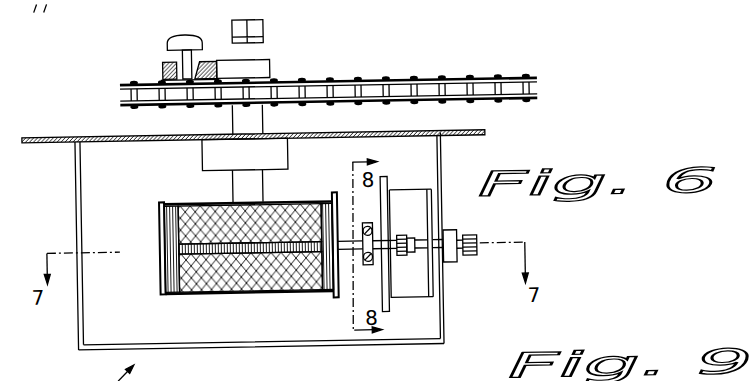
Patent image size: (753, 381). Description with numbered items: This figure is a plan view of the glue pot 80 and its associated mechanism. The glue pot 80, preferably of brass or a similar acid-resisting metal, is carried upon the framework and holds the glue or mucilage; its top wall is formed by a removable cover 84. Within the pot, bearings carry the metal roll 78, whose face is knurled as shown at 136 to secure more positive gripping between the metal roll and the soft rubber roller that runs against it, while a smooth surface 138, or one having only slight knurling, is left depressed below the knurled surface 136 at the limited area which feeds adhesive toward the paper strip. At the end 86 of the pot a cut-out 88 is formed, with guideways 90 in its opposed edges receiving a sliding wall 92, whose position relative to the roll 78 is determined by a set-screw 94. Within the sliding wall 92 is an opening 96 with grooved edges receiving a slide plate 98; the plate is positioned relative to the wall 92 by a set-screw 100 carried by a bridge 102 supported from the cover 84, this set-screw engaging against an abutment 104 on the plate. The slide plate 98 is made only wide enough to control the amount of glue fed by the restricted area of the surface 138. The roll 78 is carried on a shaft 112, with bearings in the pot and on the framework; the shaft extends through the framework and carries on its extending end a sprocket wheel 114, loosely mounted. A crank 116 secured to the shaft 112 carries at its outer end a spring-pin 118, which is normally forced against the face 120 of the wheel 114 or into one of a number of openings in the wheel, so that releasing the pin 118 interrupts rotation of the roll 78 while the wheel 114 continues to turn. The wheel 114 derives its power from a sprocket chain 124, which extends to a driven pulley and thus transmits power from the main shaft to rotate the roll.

The metal roll 78 is at (228, 300).
The glue pot 80 is at (534, 247).
The removable cover 84 is at (261, 332).
The end of the pot 86 is at (441, 314).
The cut-out 88 is at (432, 223).
The guideways 90 is at (333, 194).
The sliding wall 92 is at (419, 280).
The set-screw 94 is at (484, 238).
The opening 96 is at (411, 255).
The slide plate 98 is at (360, 259).
The set-screw 100 is at (402, 227).
The bridge 102 is at (382, 189).
The abutment 104 is at (351, 251).
The shaft 112 is at (247, 181).
The sprocket wheel 114 is at (340, 84).
The crank 116 is at (220, 67).
The spring-pin 118 is at (183, 40).
The face of wheel 120 is at (312, 72).
The sprocket chain 124 is at (492, 69).
The knurled surface 136 is at (164, 276).
The smooth surface 138 is at (202, 248).